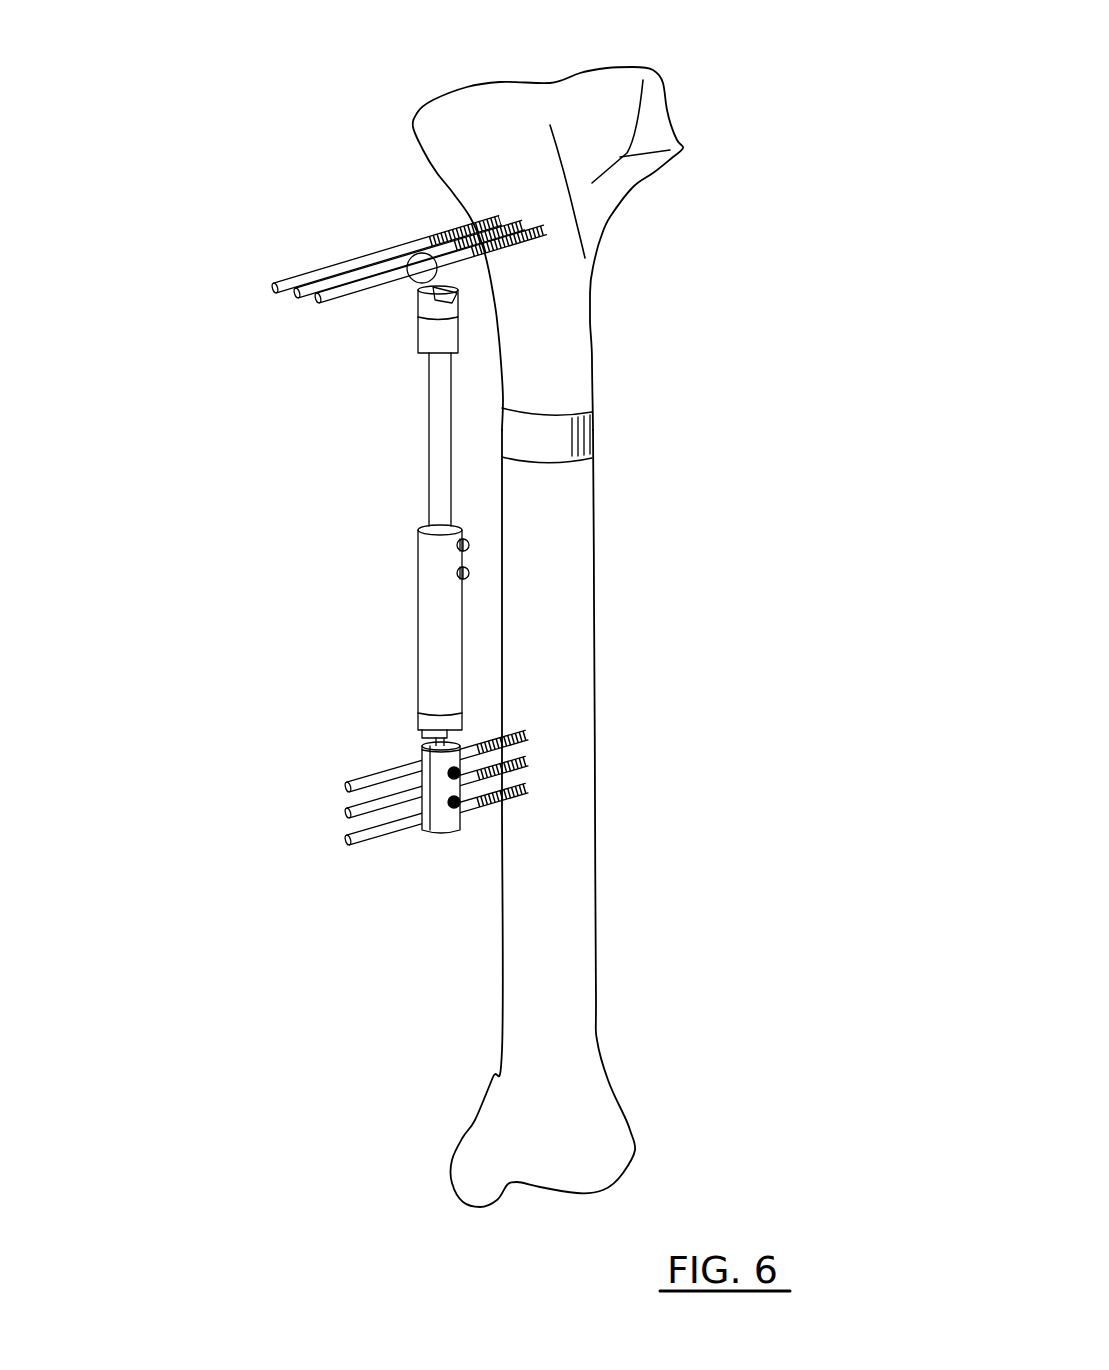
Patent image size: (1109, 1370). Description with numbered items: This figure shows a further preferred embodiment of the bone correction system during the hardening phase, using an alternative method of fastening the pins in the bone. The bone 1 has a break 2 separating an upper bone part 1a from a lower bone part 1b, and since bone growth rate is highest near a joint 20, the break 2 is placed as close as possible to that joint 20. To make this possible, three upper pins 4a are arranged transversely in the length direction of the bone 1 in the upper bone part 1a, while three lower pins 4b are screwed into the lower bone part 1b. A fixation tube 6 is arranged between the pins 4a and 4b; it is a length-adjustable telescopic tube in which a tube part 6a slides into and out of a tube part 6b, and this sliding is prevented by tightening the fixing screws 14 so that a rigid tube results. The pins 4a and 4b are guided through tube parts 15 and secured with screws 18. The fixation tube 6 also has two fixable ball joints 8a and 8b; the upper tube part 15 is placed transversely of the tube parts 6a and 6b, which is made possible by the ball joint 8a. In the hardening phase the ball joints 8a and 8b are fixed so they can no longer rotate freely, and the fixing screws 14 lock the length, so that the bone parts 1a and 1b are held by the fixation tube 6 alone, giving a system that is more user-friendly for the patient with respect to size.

The joint 20 is at (393, 76).
The bone 1 is at (735, 234).
The bone part 1a is at (573, 338).
The bone part 1b is at (570, 973).
The break 2 is at (535, 450).
The fixation tube 6 is at (285, 556).
The tube part 6a is at (442, 455).
The tube part 6b is at (427, 626).
The ball joint 8a is at (412, 282).
The ball joint 8b is at (420, 740).
The pins 4a is at (312, 299).
The pins 4b is at (370, 780).
The fixing screws 14 is at (469, 545).
The tube part 15 is at (438, 823).
The screws 18 is at (453, 779).